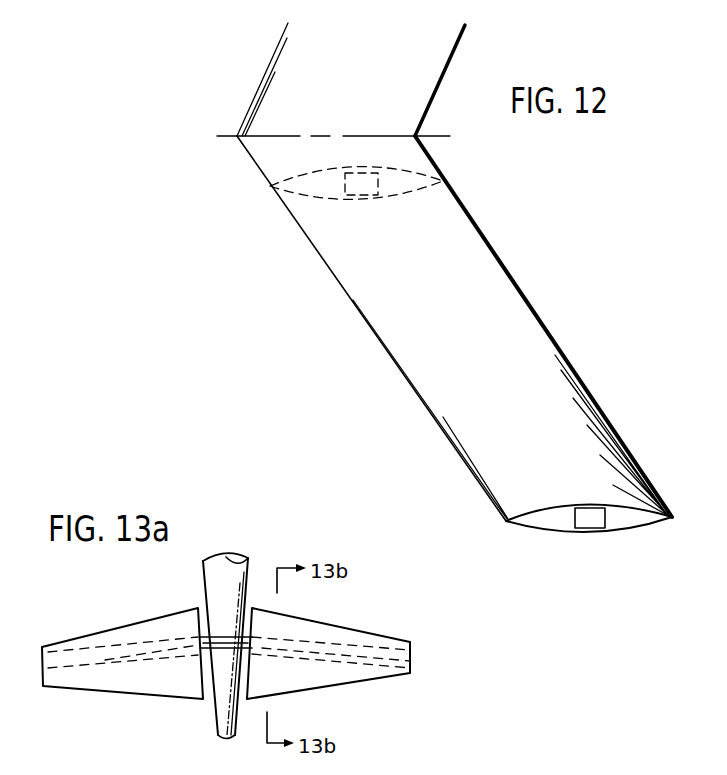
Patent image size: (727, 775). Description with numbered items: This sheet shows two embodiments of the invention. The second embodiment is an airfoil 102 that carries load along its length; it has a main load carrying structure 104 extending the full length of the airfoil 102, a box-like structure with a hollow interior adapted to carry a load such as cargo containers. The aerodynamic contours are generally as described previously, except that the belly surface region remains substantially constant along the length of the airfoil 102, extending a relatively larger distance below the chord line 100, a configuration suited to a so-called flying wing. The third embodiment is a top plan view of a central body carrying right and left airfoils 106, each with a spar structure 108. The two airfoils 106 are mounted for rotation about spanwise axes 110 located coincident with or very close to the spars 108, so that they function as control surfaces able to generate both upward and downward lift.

In FIG. 13a, the chord line 100 is at (108, 683).
In FIG. 12, the airfoil 102 is at (503, 246).
In FIG. 12, the main load carrying structure 104 is at (575, 520).
In FIG. 13a, the main load carrying structure 104 is at (240, 575).
In FIG. 13a, the airfoil 106 is at (340, 680).
In FIG. 13a, the spar structure 108 is at (98, 647).
In FIG. 13a, the spanwise axis 110 is at (187, 647).